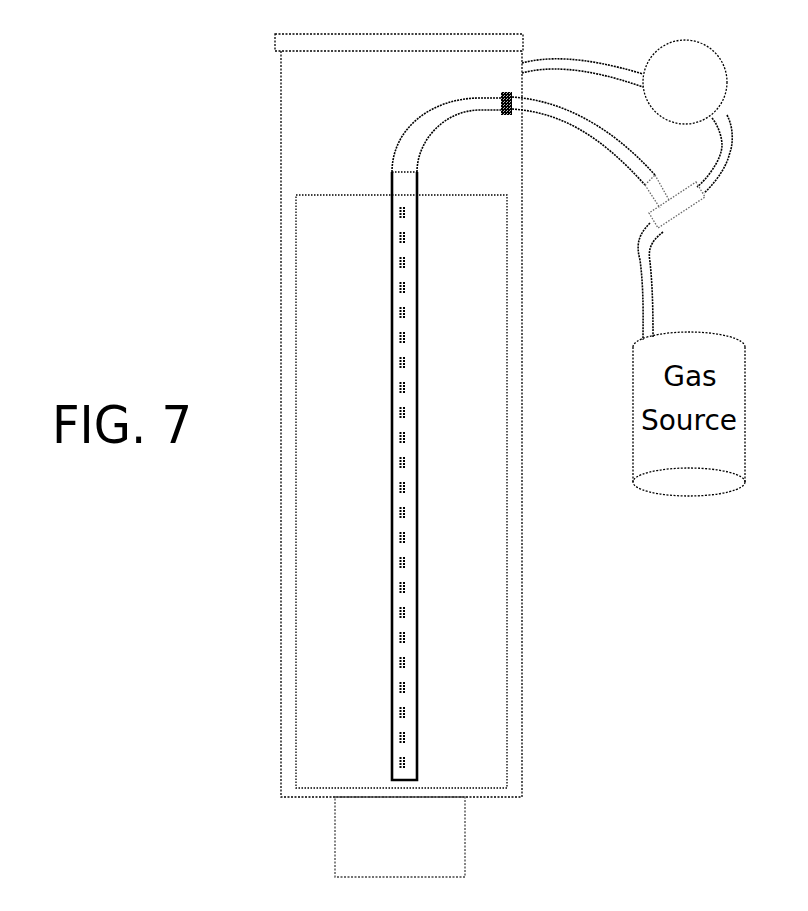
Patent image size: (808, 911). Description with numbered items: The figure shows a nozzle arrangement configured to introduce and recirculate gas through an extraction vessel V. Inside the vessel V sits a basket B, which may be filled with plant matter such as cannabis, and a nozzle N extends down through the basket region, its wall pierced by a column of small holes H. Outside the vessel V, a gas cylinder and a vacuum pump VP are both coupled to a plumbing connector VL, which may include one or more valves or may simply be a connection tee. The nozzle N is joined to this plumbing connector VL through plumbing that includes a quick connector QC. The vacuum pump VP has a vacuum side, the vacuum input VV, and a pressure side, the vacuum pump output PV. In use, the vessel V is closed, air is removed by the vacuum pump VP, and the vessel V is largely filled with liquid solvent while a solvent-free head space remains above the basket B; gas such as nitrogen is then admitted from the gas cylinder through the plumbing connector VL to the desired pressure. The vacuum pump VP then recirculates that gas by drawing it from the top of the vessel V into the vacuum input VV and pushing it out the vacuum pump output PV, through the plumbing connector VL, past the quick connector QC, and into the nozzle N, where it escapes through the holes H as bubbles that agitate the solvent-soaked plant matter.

The vessel V is at (280, 243).
The basket B is at (295, 368).
The nozzle N is at (418, 318).
The holes H is at (408, 398).
The quick connector QC is at (505, 119).
The vacuum input VV is at (583, 57).
The vacuum pump VP is at (685, 82).
The vacuum pump output PV is at (734, 146).
The plumbing connector VL is at (678, 212).